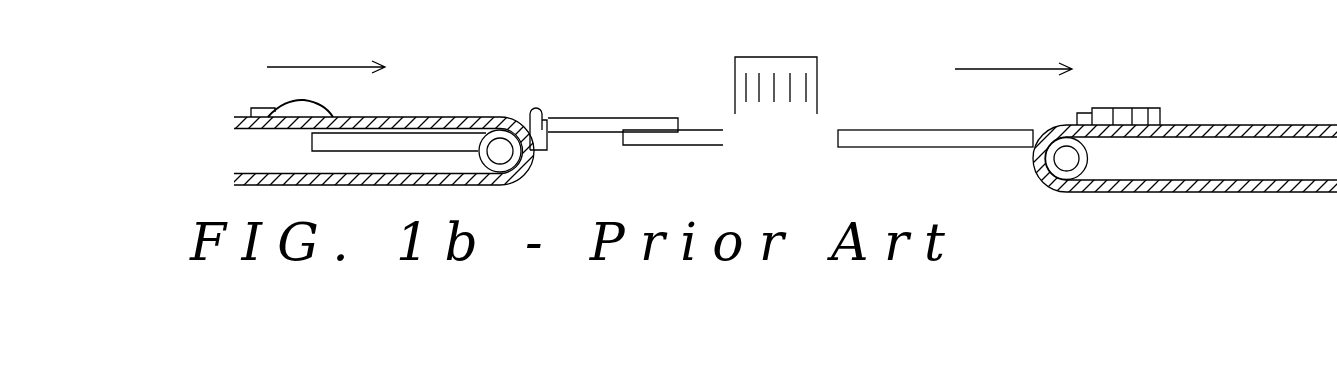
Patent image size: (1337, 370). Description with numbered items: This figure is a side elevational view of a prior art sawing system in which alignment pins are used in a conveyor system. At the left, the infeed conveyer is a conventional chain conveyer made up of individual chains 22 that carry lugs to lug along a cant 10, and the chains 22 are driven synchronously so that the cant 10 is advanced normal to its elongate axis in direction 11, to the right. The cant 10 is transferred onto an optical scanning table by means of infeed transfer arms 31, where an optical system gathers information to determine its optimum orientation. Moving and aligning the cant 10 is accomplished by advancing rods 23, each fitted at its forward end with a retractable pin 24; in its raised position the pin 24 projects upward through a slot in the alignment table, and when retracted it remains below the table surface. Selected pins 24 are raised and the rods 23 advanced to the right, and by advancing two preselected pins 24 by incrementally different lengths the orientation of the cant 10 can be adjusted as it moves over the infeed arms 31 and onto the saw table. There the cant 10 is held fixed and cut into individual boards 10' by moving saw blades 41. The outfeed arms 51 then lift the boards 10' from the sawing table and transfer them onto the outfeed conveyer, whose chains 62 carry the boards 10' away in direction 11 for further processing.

The cant 10 is at (276, 70).
The boards 10' is at (1133, 75).
The direction 11 is at (691, 60).
The chains 22 is at (450, 119).
The advancing rod 23 is at (460, 143).
The retractable pin 24 is at (536, 112).
The infeed transfer arms 31 is at (641, 122).
The saw 41 is at (735, 83).
The outfeed arms 51 is at (878, 135).
The chains 62 is at (1287, 127).